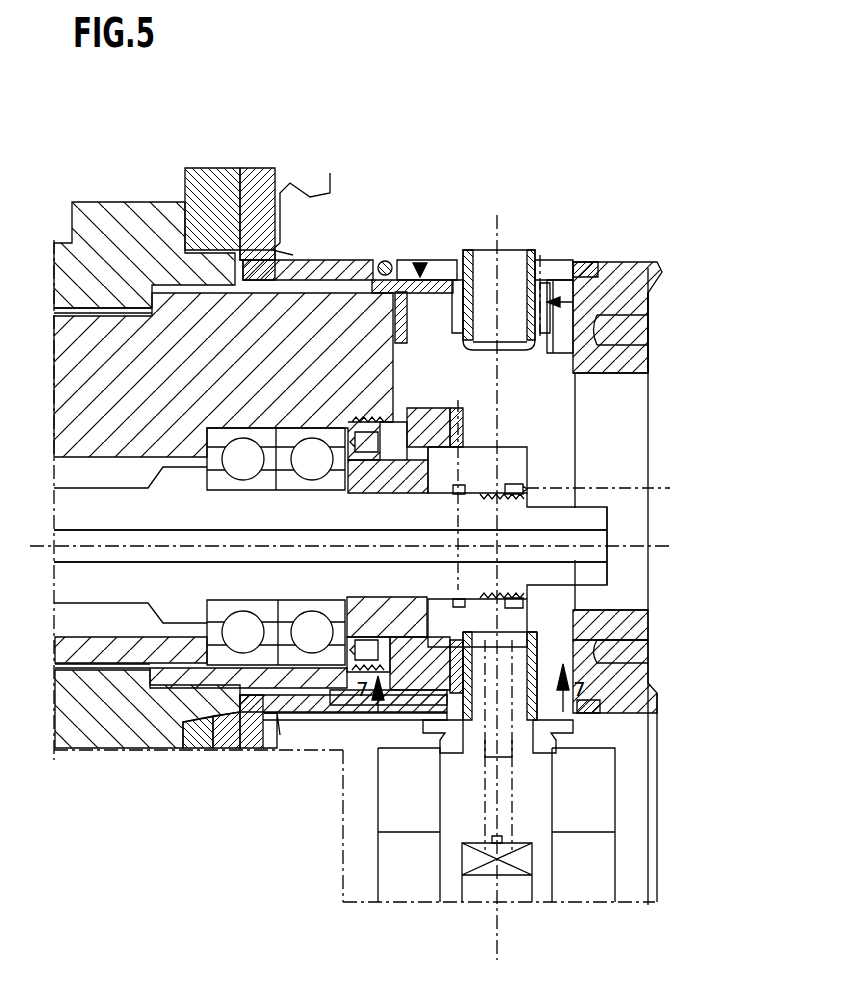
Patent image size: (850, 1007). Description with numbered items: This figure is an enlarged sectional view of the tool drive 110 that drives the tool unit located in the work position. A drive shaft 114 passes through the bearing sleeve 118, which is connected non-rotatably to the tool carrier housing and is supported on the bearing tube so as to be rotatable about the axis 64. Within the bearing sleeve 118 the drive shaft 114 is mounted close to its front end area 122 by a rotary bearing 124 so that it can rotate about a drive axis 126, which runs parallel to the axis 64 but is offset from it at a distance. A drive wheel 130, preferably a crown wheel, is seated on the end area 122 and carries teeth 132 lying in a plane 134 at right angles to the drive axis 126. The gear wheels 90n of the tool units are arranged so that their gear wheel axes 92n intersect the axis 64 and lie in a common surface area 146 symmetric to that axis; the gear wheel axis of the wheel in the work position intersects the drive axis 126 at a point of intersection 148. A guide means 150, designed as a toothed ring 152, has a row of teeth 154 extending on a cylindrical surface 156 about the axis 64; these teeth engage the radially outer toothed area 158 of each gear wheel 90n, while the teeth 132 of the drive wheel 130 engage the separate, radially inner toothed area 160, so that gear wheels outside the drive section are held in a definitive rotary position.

The axis 64 is at (630, 488).
The gear wheel 90n is at (620, 277).
The gear wheel axis 92n is at (497, 366).
The tool drive 110 is at (470, 455).
The drive shaft 114 is at (125, 500).
The bearing sleeve 118 is at (313, 332).
The front end area 122 is at (453, 527).
The rotary bearing 124 is at (227, 680).
The drive axis 126 is at (632, 548).
The drive wheel 130 is at (400, 598).
The teeth 132 is at (464, 413).
The plane 134 is at (470, 470).
The surface area 146 is at (500, 927).
The point of intersection 148 is at (443, 560).
The guide means 150 is at (418, 260).
The toothed ring 152 is at (440, 277).
The row of teeth 154 is at (462, 275).
The cylindrical surface 156 is at (660, 278).
The toothed area 158 is at (555, 262).
The toothed area 160 is at (625, 327).